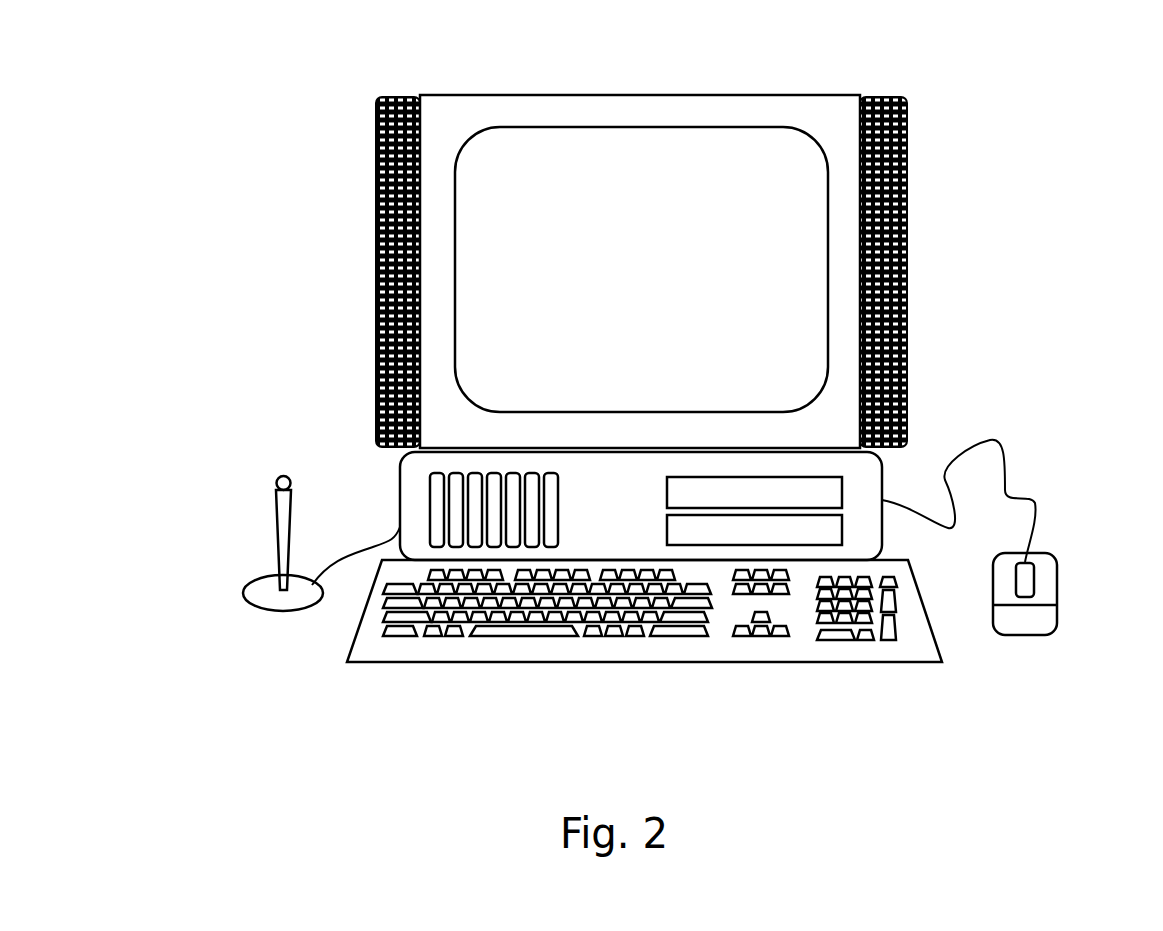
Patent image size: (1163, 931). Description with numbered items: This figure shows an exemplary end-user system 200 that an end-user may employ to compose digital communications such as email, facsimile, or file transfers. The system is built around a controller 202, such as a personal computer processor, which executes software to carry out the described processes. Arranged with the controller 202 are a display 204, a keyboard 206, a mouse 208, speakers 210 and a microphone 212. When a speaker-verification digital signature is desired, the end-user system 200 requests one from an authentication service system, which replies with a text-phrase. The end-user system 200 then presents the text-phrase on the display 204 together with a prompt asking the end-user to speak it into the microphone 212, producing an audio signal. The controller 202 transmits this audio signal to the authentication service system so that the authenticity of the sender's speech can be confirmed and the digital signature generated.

The end-user system 200 is at (186, 108).
The controller 202 is at (883, 468).
The display 204 is at (673, 284).
The keyboard 206 is at (776, 662).
The mouse 208 is at (1053, 556).
The speakers 210 is at (398, 97).
The microphone 212 is at (280, 533).